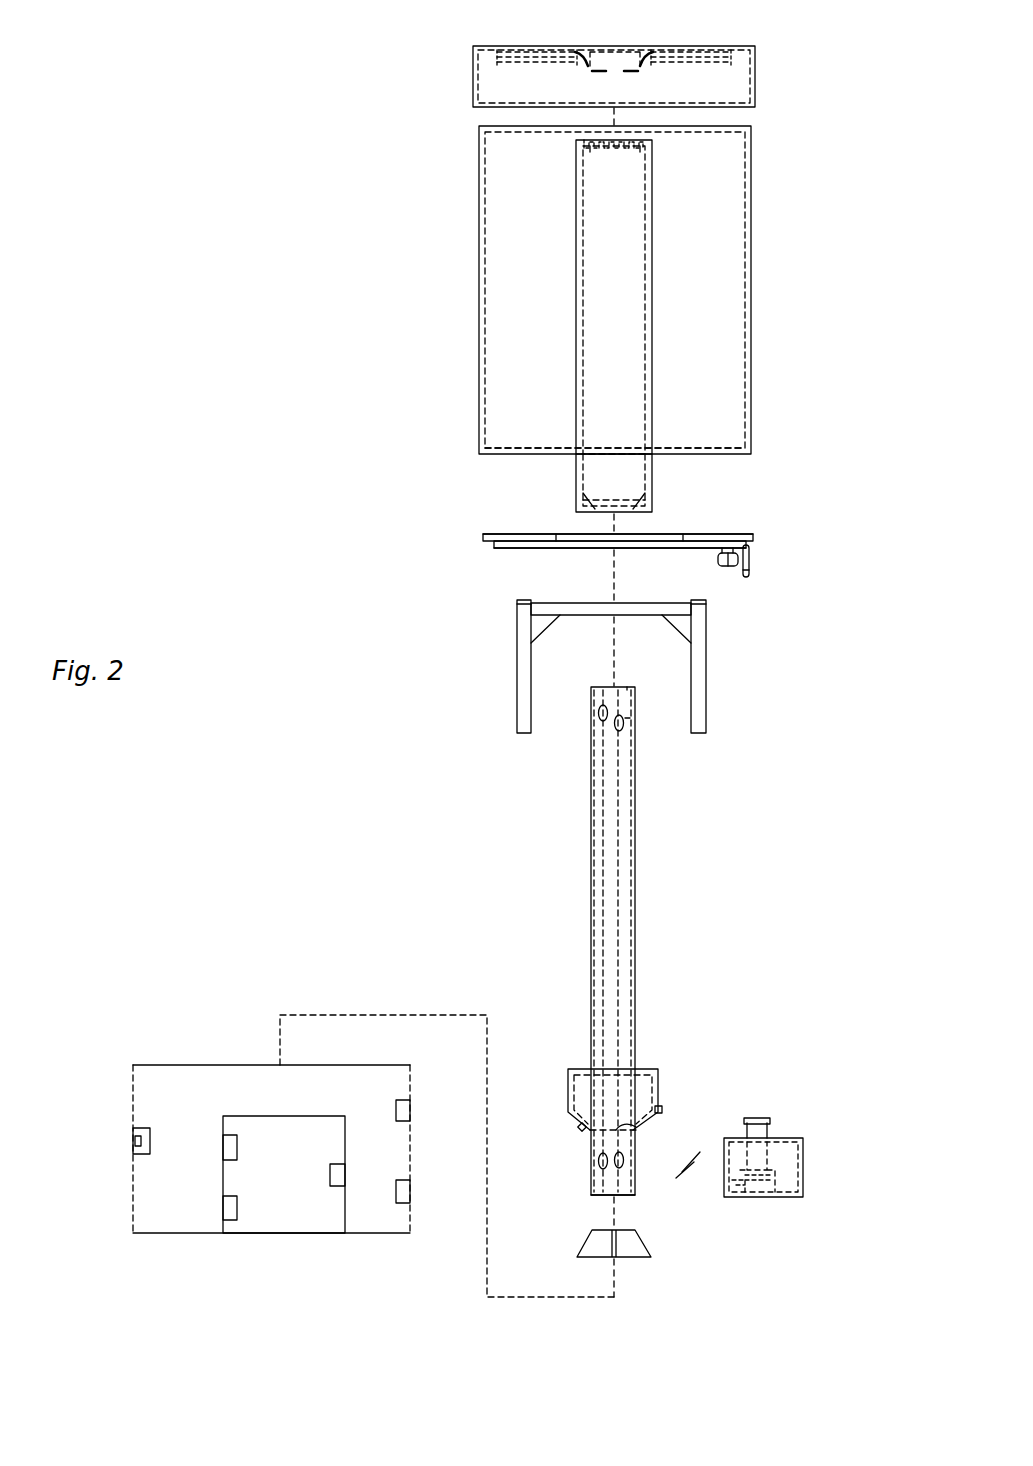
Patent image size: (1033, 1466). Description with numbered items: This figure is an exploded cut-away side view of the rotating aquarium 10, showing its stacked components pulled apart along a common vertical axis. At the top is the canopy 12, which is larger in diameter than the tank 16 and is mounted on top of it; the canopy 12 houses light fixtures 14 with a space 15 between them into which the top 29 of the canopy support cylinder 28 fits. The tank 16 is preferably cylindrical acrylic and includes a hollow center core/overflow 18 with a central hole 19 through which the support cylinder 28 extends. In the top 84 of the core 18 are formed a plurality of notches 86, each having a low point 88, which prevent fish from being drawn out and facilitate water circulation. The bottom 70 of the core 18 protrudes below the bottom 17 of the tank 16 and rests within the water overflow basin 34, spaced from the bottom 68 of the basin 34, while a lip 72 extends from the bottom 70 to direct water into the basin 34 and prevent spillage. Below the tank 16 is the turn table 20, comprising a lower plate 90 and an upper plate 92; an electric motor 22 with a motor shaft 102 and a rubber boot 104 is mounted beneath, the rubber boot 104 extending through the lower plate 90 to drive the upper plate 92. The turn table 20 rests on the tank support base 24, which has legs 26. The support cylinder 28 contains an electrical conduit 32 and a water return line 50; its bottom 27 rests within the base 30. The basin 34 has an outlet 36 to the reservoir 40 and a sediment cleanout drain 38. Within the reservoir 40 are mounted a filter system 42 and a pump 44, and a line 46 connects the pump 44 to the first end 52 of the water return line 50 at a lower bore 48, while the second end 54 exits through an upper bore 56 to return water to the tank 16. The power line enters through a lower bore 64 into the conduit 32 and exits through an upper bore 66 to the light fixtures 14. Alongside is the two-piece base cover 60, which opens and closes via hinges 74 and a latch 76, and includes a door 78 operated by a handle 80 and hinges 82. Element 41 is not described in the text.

The aquarium 10 is at (317, 172).
The canopy 12 is at (771, 84).
The light fixtures 14 is at (552, 50).
The space 15 is at (617, 52).
The tank 16 is at (764, 242).
The bottom of tank 17 is at (483, 447).
The hollow center core/overflow 18 is at (652, 286).
The central hole 19 is at (618, 507).
The turn table 20 is at (769, 540).
The electric motor 22 is at (728, 566).
The tank support base 24 is at (514, 651).
The legs 26 is at (524, 675).
The bottom of support cylinder 27 is at (625, 1197).
The canopy support cylinder 28 is at (581, 934).
The top of support cylinder 29 is at (627, 687).
The base 30 is at (662, 1255).
The electrical conduit 32 is at (603, 829).
The water overflow basin 34 is at (566, 1058).
The outlet 36 is at (662, 1108).
The sediment cleanout drain 38 is at (580, 1128).
The reservoir 40 is at (803, 1138).
The pump 41 is at (757, 1152).
The filter system 42 is at (760, 1128).
The pump 44 is at (738, 1197).
The line 46 is at (692, 1165).
The lower bore 48 is at (622, 1168).
The water return line 50 is at (618, 865).
The first end of water return line 52 is at (678, 1176).
The second end of water return line 54 is at (630, 718).
The upper bore 56 is at (621, 714).
The base cover 60 is at (247, 1053).
The lower bore 64 is at (600, 1166).
The upper bore 66 is at (596, 706).
The bottom of basin 68 is at (626, 1126).
The bottom of core 70 is at (578, 510).
The lip 72 is at (595, 508).
The hinges 74 is at (408, 1108).
The latch 76 is at (138, 1135).
The door 78 is at (277, 1198).
The handle 80 is at (338, 1186).
The hinges 82 is at (228, 1208).
The top of core 84 is at (653, 149).
The notches 86 is at (640, 145).
The low point 88 is at (607, 145).
The lower plate 90 is at (502, 549).
The upper plate 92 is at (497, 540).
The motor shaft 102 is at (750, 568).
The rubber boot 104 is at (750, 552).